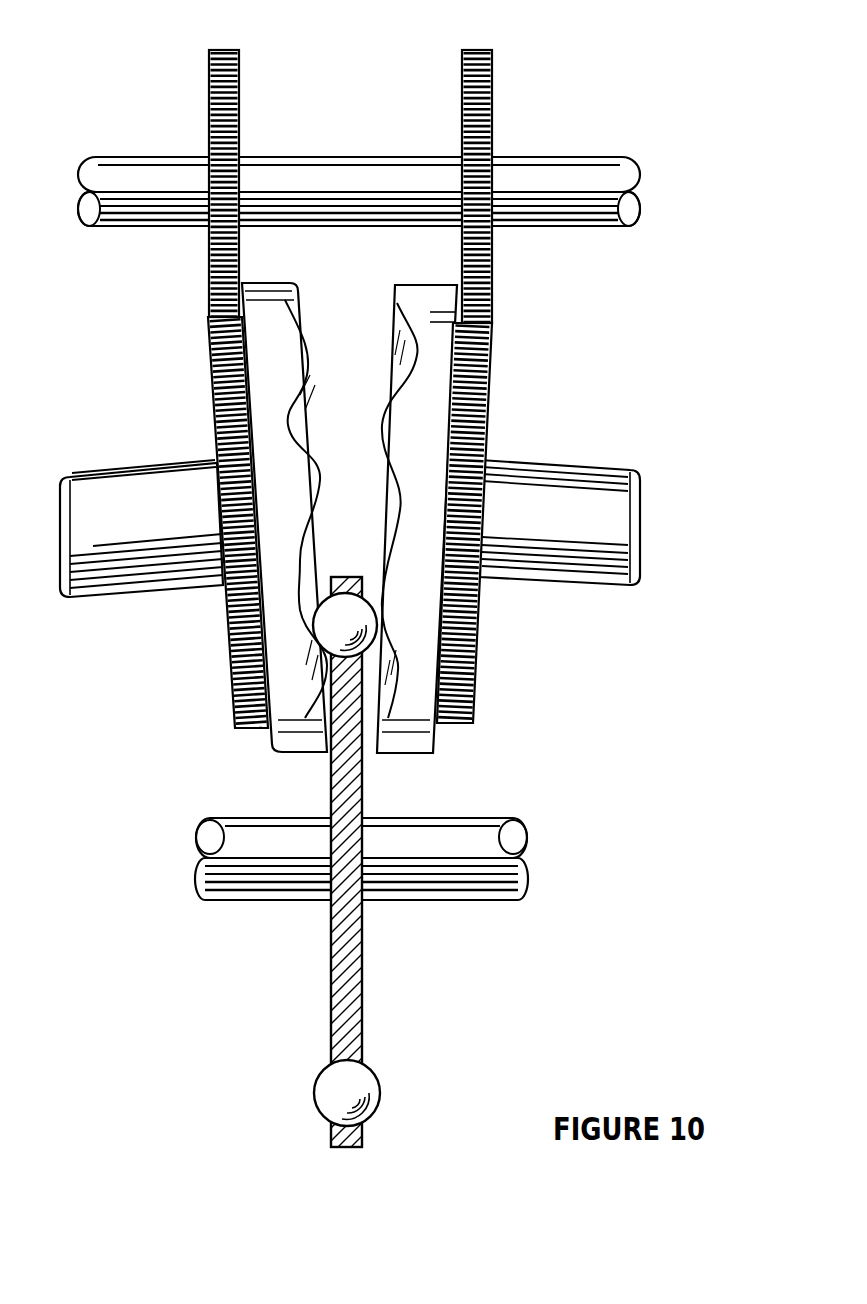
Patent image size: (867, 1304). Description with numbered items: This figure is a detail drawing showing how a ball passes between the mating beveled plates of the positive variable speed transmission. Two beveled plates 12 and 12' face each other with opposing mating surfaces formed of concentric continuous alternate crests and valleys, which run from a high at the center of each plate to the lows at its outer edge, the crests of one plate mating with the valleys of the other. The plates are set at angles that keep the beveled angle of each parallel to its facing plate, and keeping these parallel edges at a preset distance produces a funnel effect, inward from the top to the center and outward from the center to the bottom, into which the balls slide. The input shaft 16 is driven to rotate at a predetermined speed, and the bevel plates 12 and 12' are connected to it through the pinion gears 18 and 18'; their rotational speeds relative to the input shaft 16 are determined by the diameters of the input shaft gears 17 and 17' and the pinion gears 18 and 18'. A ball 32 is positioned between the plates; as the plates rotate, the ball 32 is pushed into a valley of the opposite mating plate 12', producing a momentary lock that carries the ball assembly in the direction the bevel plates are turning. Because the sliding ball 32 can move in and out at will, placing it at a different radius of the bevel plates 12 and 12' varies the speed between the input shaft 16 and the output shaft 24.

The beveled plate 12 is at (270, 535).
The beveled plate 12' is at (439, 534).
The input shaft 16 is at (94, 158).
The input shaft gear 17 is at (196, 167).
The input shaft gear 17' is at (509, 166).
The pinion gear 18 is at (195, 513).
The pinion gear 18' is at (506, 508).
The output shaft 24 is at (460, 900).
The ball 32 is at (305, 652).